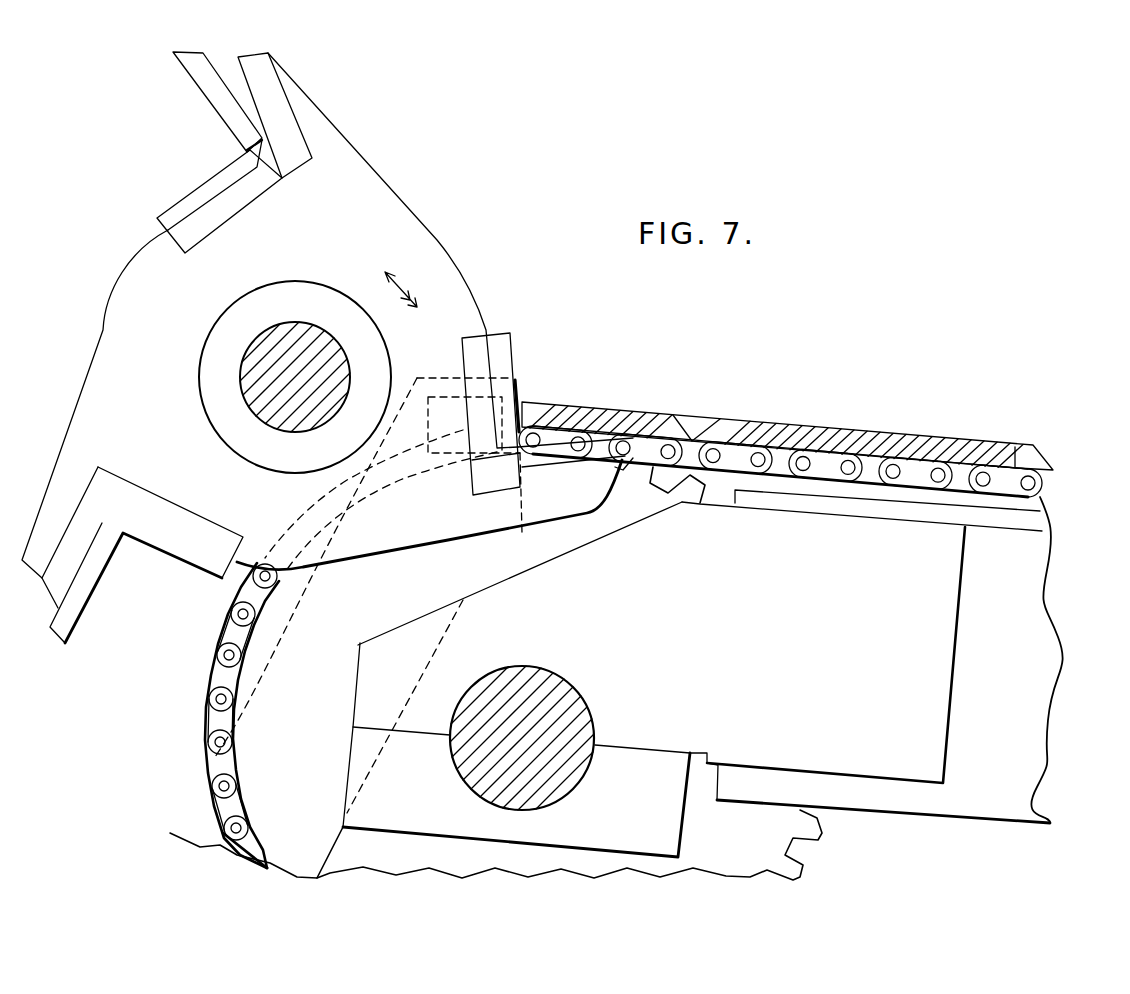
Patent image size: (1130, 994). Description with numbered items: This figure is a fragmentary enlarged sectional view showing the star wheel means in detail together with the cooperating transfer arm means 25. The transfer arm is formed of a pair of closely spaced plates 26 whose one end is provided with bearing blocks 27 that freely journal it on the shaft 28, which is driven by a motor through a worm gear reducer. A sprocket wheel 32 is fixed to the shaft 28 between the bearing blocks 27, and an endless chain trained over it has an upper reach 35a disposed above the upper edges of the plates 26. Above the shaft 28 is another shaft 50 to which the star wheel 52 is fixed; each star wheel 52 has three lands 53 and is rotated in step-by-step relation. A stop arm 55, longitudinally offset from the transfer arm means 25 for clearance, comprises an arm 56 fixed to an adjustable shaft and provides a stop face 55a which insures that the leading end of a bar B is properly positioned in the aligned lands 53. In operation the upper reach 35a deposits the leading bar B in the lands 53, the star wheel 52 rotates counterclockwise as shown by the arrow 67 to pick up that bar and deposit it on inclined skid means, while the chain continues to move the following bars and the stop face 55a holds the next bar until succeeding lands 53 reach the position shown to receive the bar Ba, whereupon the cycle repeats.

The transfer arm means 25 is at (1060, 543).
The plates 26 is at (1030, 582).
The bearing blocks 27 is at (932, 657).
The shaft 28 is at (563, 717).
The sprocket wheel 32 is at (270, 702).
The upper reach of chain 35a is at (835, 455).
The shaft 50 is at (272, 353).
The star wheel 52 is at (337, 220).
The lands 53 is at (198, 165).
The stop arm 55 is at (187, 815).
The stop face 55a is at (517, 382).
The arm 56 is at (183, 828).
The arrow 67 is at (403, 280).
The bar B is at (645, 410).
The bar Ba is at (772, 430).